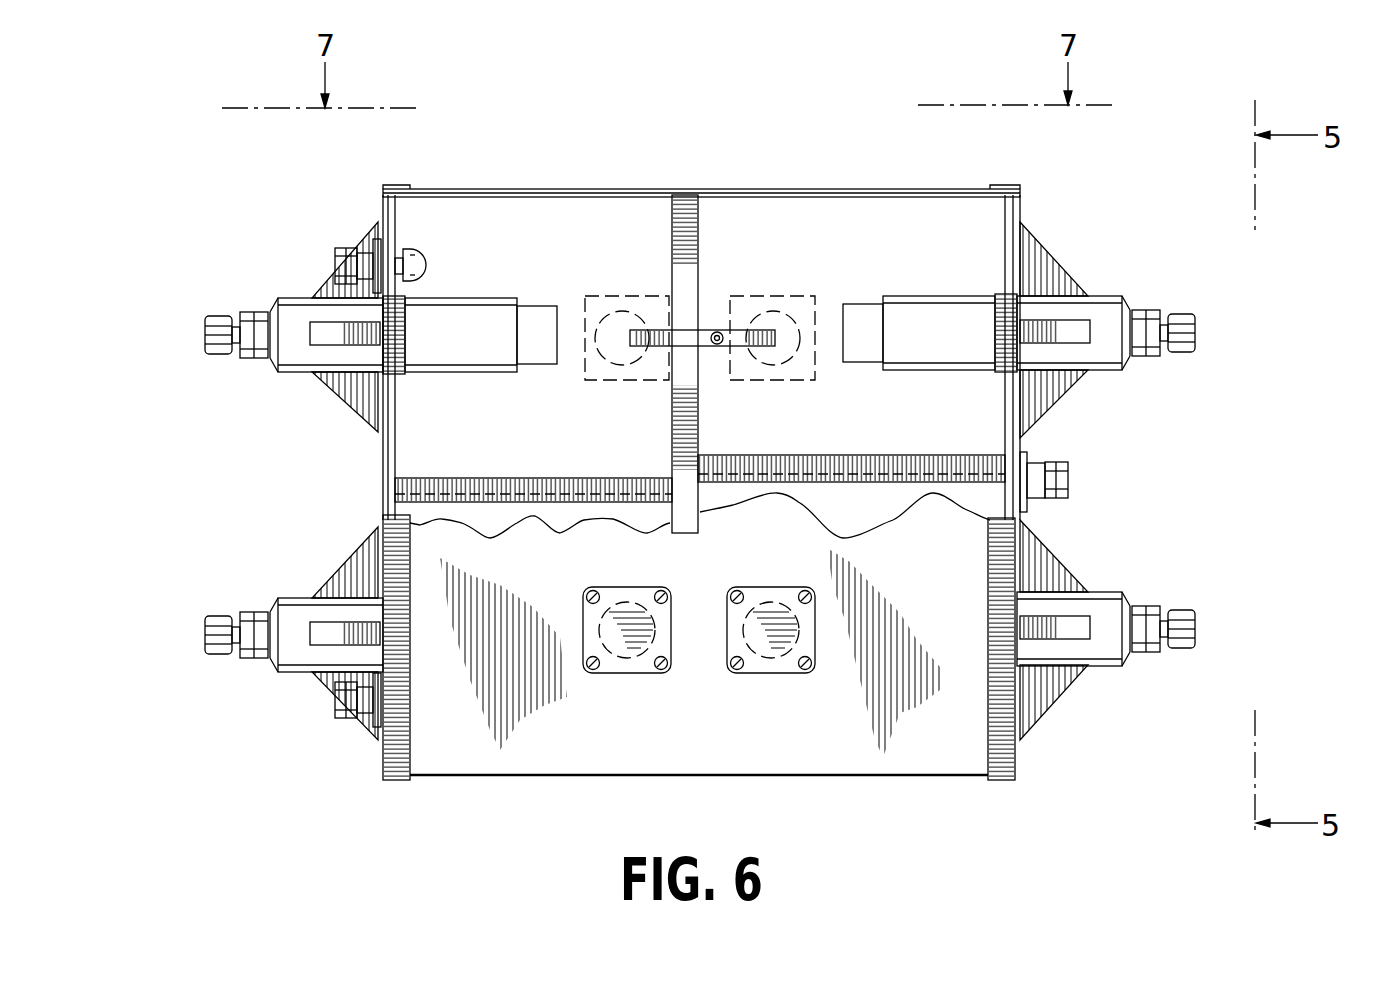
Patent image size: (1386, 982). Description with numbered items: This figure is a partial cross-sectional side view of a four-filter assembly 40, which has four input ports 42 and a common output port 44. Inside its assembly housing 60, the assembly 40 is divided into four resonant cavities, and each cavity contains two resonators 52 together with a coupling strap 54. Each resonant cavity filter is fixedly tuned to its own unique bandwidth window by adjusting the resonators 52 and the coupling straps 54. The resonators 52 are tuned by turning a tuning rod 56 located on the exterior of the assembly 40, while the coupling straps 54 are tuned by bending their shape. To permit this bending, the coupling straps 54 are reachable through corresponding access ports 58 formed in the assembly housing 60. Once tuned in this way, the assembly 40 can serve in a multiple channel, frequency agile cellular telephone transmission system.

The four-filter assembly 40 is at (340, 790).
The input port 42 is at (340, 268).
The common output port 44 is at (1070, 478).
The resonator 52 is at (472, 345).
The coupling strap 54 is at (640, 336).
The tuning rod 56 is at (215, 330).
The access port 58 is at (626, 648).
The assembly housing 60 is at (516, 194).